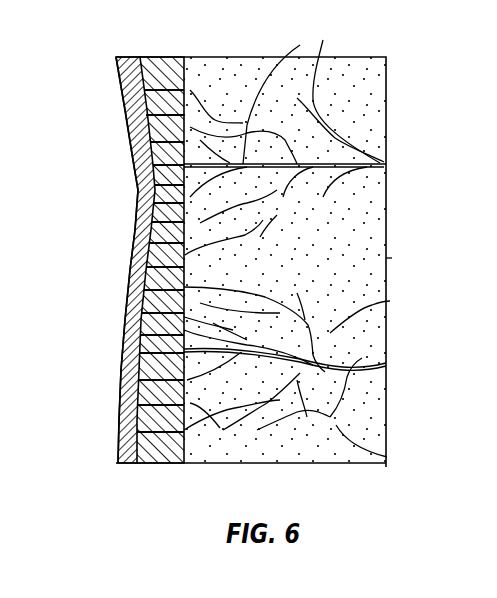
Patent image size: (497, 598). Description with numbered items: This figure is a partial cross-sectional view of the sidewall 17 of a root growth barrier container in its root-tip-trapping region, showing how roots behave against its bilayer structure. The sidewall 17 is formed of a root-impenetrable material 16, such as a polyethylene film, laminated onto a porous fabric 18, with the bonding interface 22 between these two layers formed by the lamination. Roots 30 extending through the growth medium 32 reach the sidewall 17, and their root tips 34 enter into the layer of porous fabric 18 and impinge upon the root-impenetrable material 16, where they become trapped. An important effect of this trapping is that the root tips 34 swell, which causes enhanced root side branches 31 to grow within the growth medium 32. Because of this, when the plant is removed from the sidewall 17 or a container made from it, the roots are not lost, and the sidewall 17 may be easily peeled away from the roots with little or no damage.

The root-impenetrable material 16 is at (127, 101).
The sidewall 17 is at (107, 229).
The porous fabric 18 is at (153, 57).
The bonding interface 22 is at (134, 57).
The roots 30 is at (368, 167).
The root side branches 31 is at (300, 45).
The growth medium 32 is at (368, 68).
The root tips 34 is at (135, 143).